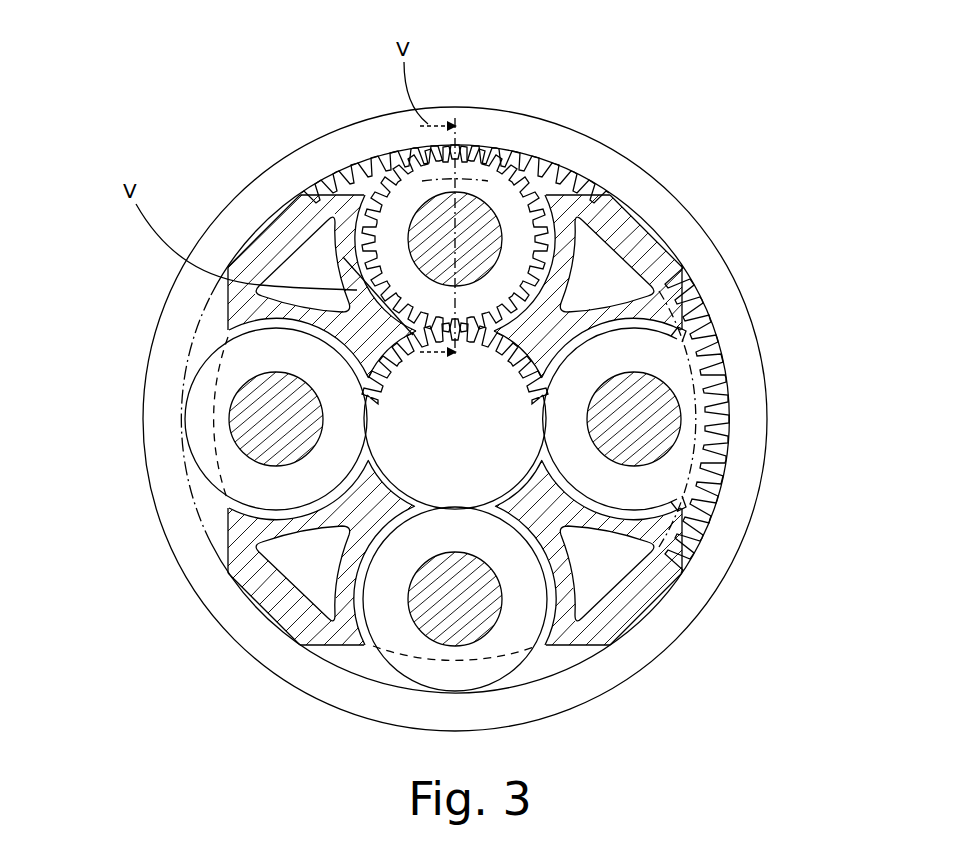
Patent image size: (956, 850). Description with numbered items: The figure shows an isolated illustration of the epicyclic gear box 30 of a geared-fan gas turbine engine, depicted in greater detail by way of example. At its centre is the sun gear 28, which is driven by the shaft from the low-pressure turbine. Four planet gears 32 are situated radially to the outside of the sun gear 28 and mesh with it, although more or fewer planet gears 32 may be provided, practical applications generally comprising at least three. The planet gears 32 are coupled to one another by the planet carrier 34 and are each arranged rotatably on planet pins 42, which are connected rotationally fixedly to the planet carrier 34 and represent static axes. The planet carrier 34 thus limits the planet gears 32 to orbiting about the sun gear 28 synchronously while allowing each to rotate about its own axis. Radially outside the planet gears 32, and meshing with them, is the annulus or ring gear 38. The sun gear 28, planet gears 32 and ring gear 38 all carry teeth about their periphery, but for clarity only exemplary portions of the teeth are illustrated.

The sun gear 28 is at (470, 431).
The epicyclic gear box arrangement 30 is at (262, 162).
The planet gears 32 is at (636, 366).
The planet carrier 34 is at (624, 526).
The ring gear 38 is at (768, 360).
The planet pins 42 is at (217, 436).